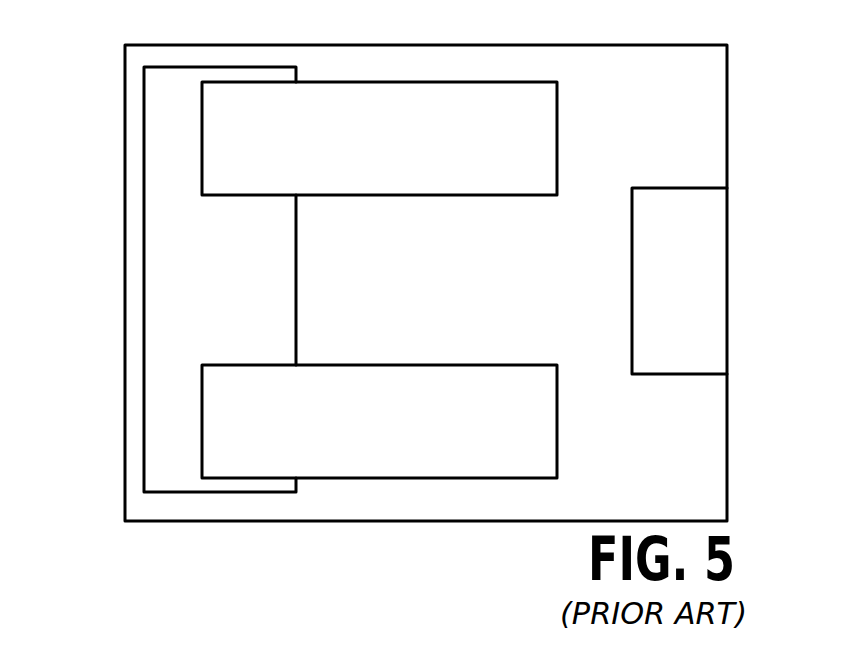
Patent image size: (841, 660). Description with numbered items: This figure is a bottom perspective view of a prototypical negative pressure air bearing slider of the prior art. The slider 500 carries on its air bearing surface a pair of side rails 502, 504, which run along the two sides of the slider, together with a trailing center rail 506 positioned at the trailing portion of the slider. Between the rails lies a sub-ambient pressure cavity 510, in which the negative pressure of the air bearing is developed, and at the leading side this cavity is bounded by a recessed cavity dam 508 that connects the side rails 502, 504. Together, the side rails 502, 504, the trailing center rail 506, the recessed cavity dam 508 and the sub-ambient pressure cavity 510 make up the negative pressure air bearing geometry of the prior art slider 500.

The slider 500 is at (93, 144).
The side rail 502 is at (383, 82).
The side rail 504 is at (416, 365).
The trailing center rail 506 is at (727, 254).
The recessed cavity dam 508 is at (163, 255).
The sub-ambient pressure cavity 510 is at (450, 267).